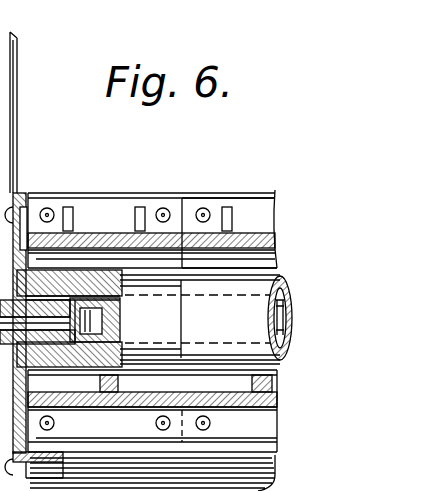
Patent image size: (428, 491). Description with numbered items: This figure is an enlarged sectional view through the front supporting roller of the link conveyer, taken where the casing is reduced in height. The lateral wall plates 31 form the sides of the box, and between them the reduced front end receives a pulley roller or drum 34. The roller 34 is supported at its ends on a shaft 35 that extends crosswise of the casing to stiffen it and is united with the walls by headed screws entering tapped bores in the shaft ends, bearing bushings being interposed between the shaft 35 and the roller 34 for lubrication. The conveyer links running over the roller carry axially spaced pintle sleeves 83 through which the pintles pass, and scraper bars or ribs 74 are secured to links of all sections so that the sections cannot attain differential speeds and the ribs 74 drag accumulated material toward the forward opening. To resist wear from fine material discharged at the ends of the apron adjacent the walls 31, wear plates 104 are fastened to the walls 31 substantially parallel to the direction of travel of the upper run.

The lateral wall plate 31 is at (17, 94).
The wear plate 104 is at (21, 193).
The pintle sleeve 83 is at (104, 235).
The scraper bar 74 is at (215, 193).
The pulley roller 34 is at (265, 283).
The shaft 35 is at (163, 330).